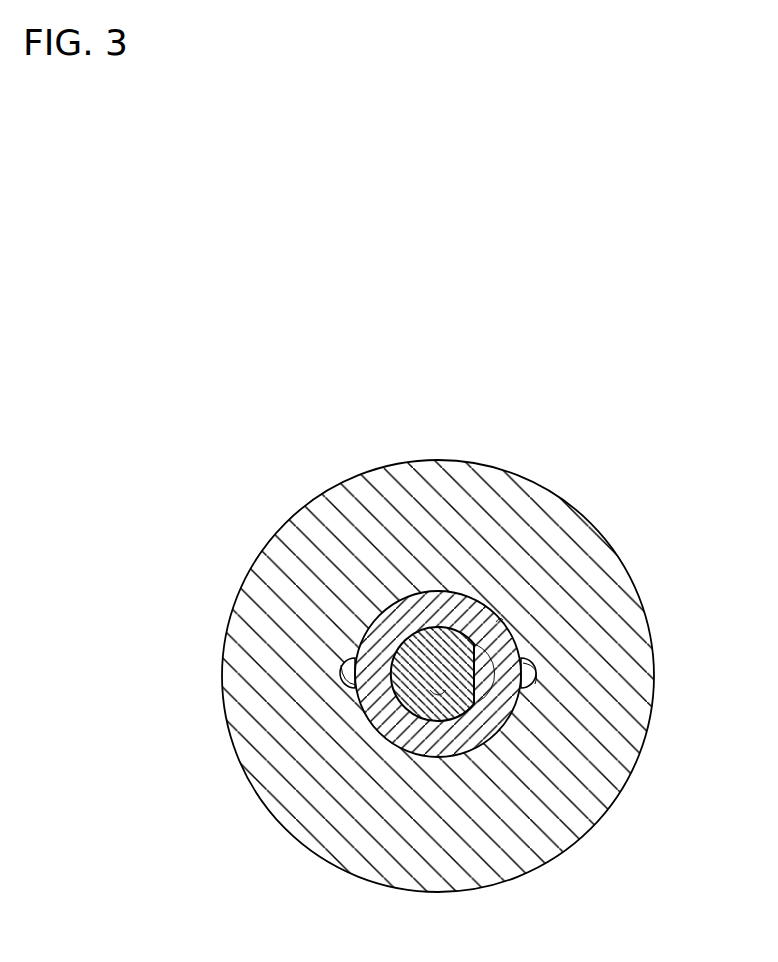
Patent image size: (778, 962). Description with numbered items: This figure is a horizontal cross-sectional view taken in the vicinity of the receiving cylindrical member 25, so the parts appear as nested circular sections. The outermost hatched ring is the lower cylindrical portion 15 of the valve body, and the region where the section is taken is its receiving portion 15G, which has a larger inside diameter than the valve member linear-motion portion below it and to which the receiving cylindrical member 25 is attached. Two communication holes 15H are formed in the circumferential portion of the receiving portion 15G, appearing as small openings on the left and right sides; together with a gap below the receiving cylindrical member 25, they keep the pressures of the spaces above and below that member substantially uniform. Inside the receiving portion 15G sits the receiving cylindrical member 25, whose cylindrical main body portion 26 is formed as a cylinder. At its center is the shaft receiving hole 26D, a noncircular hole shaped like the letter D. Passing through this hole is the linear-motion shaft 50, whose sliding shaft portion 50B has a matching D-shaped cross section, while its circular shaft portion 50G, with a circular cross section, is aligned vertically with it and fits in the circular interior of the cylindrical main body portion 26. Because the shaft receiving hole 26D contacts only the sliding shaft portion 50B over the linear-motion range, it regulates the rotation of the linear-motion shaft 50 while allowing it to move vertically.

The lower cylindrical portion 15 is at (535, 873).
The receiving portion 15G is at (495, 625).
The communication holes 15H is at (343, 684).
The receiving cylindrical member 25 is at (386, 606).
The cylindrical main body portion 26 is at (418, 600).
The shaft receiving hole 26D is at (478, 638).
The linear-motion shaft 50 is at (449, 622).
The sliding shaft portion 50B is at (437, 697).
The circular shaft portion 50G is at (497, 710).